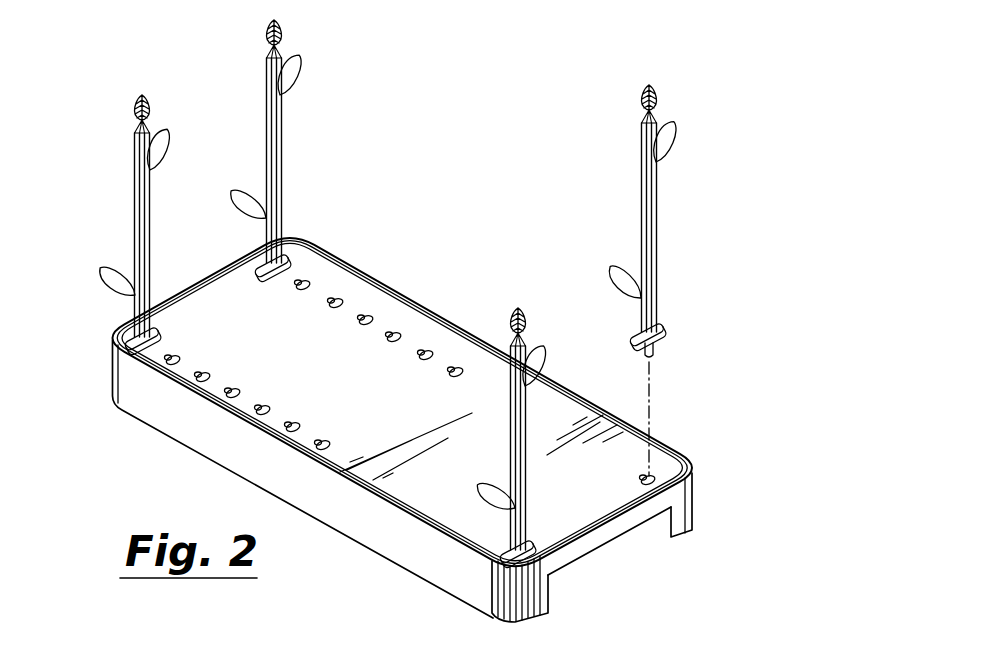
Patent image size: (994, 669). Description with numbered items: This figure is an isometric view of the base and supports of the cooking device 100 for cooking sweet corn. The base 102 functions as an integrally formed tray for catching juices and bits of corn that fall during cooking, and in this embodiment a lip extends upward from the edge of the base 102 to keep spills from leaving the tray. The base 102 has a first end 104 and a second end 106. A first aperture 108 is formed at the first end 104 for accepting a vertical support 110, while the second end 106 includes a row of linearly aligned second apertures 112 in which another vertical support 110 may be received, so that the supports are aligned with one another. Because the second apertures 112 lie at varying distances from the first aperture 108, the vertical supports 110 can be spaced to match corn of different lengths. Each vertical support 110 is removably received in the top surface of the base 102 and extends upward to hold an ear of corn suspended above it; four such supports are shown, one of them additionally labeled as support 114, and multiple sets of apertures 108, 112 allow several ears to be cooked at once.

The cooking device 100 is at (464, 217).
The base 102 is at (436, 553).
The first end 104 is at (596, 537).
The second end 106 is at (203, 278).
The first aperture 108 is at (652, 477).
The vertical support 110 is at (520, 408).
The second apertures 112 is at (369, 318).
The stalk stem 114 is at (146, 238).